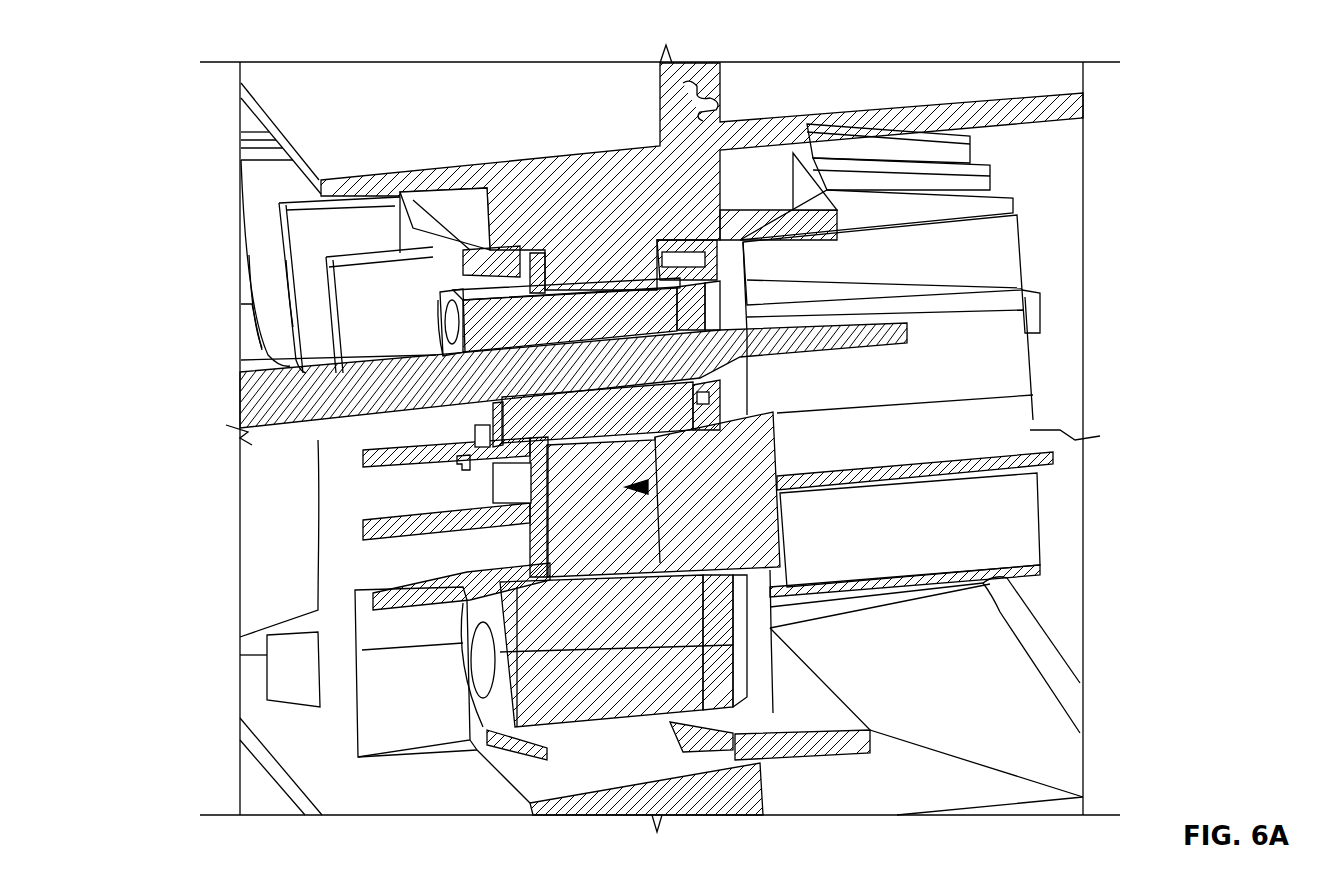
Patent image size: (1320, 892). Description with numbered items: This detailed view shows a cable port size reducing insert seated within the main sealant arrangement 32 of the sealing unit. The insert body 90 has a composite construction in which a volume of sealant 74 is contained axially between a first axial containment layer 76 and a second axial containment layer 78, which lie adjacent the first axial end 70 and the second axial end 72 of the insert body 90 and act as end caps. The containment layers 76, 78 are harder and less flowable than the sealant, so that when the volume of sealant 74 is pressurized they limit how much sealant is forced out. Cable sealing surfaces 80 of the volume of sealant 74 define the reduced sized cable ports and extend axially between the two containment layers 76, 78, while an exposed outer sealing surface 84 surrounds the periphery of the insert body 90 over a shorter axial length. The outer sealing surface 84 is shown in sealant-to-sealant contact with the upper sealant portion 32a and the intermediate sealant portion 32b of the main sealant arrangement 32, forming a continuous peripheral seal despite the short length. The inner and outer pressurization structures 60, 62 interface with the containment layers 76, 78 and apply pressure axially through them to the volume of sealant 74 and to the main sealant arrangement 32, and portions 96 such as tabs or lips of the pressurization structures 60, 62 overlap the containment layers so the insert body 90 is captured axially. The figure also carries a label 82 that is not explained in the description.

The main sealant arrangement 32 is at (565, 245).
The upper sealant portion 32a is at (740, 245).
The intermediate sealant portion 32b is at (647, 517).
The exposed outer sealing surface 84 is at (600, 245).
The portions of the pressurization structures 96 is at (720, 325).
The insert body 90 is at (573, 260).
The second axial containment layer 78 is at (750, 292).
The second axial end 72 is at (747, 317).
The volume of sealant 74 is at (520, 333).
The cable sealing surfaces 80 is at (667, 370).
The bearing race 82 is at (668, 305).
The first axial end 70 is at (440, 340).
The first axial containment layer 76 is at (473, 420).
The inner pressurization structure 60 is at (457, 467).
The outer pressurization structure 62 is at (780, 557).